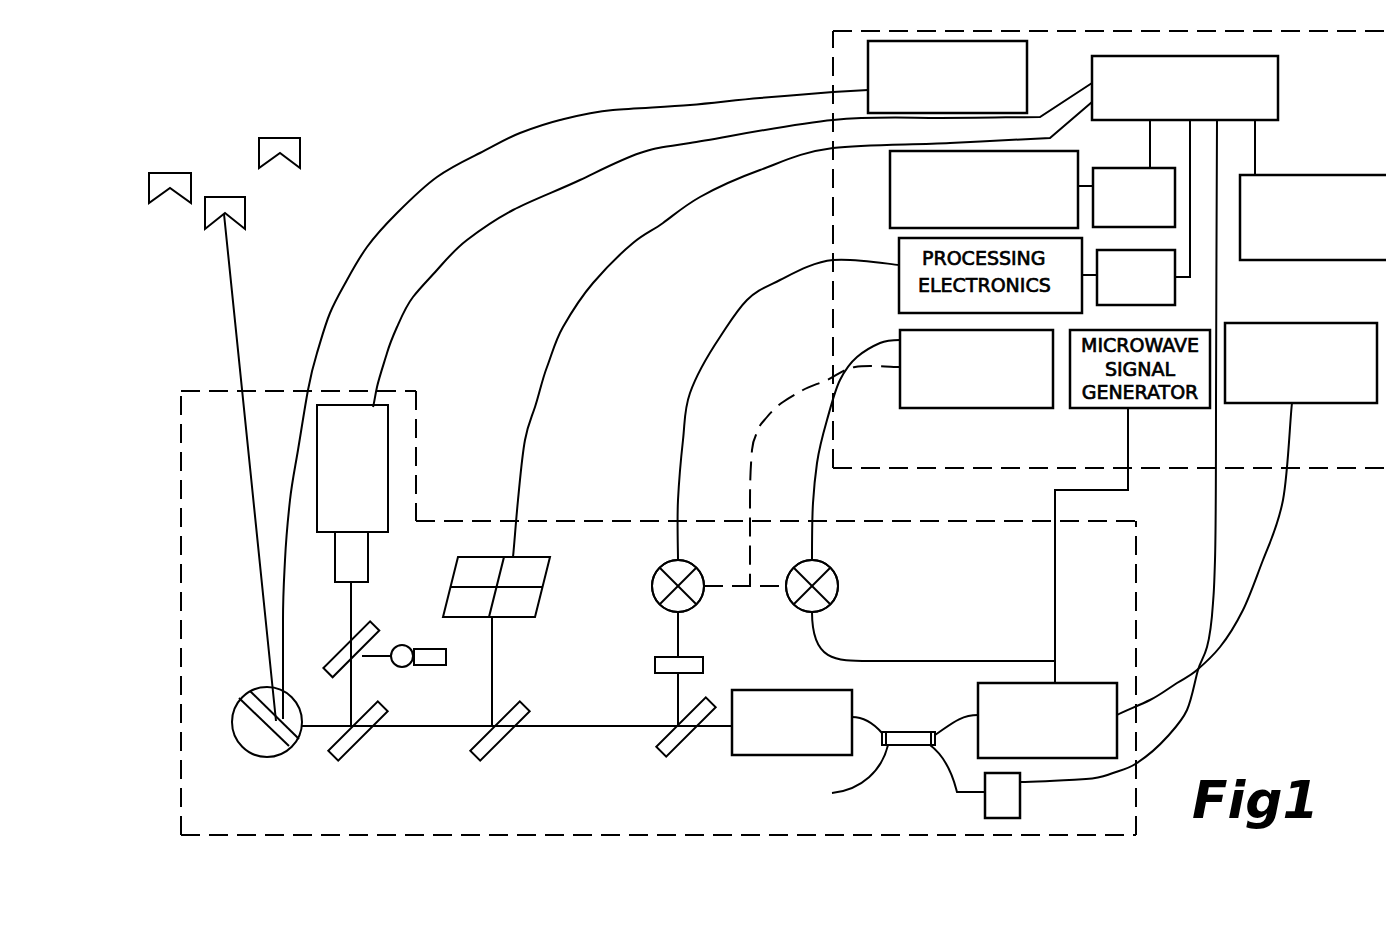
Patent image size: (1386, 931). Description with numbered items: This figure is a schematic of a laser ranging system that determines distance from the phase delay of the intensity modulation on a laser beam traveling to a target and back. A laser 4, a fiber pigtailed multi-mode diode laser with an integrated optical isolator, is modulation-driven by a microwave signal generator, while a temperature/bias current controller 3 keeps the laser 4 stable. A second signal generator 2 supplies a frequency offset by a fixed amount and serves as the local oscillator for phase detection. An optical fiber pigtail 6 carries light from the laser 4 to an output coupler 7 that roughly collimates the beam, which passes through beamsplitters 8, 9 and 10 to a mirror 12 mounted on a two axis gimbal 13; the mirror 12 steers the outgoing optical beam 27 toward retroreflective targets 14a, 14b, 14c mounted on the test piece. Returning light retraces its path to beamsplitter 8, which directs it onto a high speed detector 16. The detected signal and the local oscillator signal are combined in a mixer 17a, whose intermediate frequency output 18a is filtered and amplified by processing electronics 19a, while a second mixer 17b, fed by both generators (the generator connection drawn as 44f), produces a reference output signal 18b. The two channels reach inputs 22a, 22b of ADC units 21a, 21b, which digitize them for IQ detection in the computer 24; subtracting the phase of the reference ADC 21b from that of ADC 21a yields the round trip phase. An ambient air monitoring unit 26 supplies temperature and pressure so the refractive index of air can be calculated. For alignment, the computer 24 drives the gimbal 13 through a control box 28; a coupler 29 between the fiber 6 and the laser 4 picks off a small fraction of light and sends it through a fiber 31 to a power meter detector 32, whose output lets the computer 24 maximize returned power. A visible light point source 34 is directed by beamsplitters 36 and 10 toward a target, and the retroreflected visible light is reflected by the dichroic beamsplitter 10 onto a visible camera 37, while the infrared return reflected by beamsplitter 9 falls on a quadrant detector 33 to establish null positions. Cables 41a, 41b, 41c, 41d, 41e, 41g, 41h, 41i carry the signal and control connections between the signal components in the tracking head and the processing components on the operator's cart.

The second signal generator 2 is at (1020, 406).
The temperature/bias current controller 3 is at (1322, 323).
The laser 4 is at (1037, 752).
The optical fiber pigtail 6 is at (880, 722).
The output coupler 7 is at (780, 750).
The beamsplitter 8 is at (666, 760).
The beamsplitter 9 is at (500, 764).
The dichroic beamsplitter 10 is at (343, 762).
The mirror 12 is at (262, 690).
The two axis gimbal 13 is at (261, 757).
The target 14a is at (298, 138).
The target 14b is at (220, 197).
The target 14c is at (165, 173).
The high speed detector 16 is at (700, 658).
The mixer 17a is at (657, 600).
The second mixer 17b is at (840, 588).
The mixer output 18a is at (664, 574).
The reference channel output signal 18b is at (815, 548).
The processing electronics 19a is at (896, 226).
The ADC unit 21a is at (1115, 223).
The reference ADC unit 21b is at (1117, 303).
The ADC input 22a is at (1087, 185).
The ADC input 22b is at (1088, 280).
The computer 24 is at (1177, 117).
The ambient air monitoring unit 26 is at (1275, 206).
The outgoing optical beam 27 is at (232, 350).
The control box 28 is at (1013, 113).
The coupler 29 is at (907, 750).
The fiber 31 is at (957, 793).
The power meter detector 32 is at (1022, 803).
The IR quadrant detector 33 is at (535, 620).
The visible light point source 34 is at (416, 667).
The beamsplitter 36 is at (331, 663).
The visible camera 37 is at (340, 484).
The cable 41a is at (621, 110).
The cable 41b is at (650, 157).
The cable 41c is at (621, 258).
The cable 41d is at (716, 343).
The cable 41e is at (762, 412).
The cable 41g is at (1055, 493).
The cable 41h is at (1282, 500).
The cable 41i is at (1213, 560).
The signal line 44f is at (812, 494).